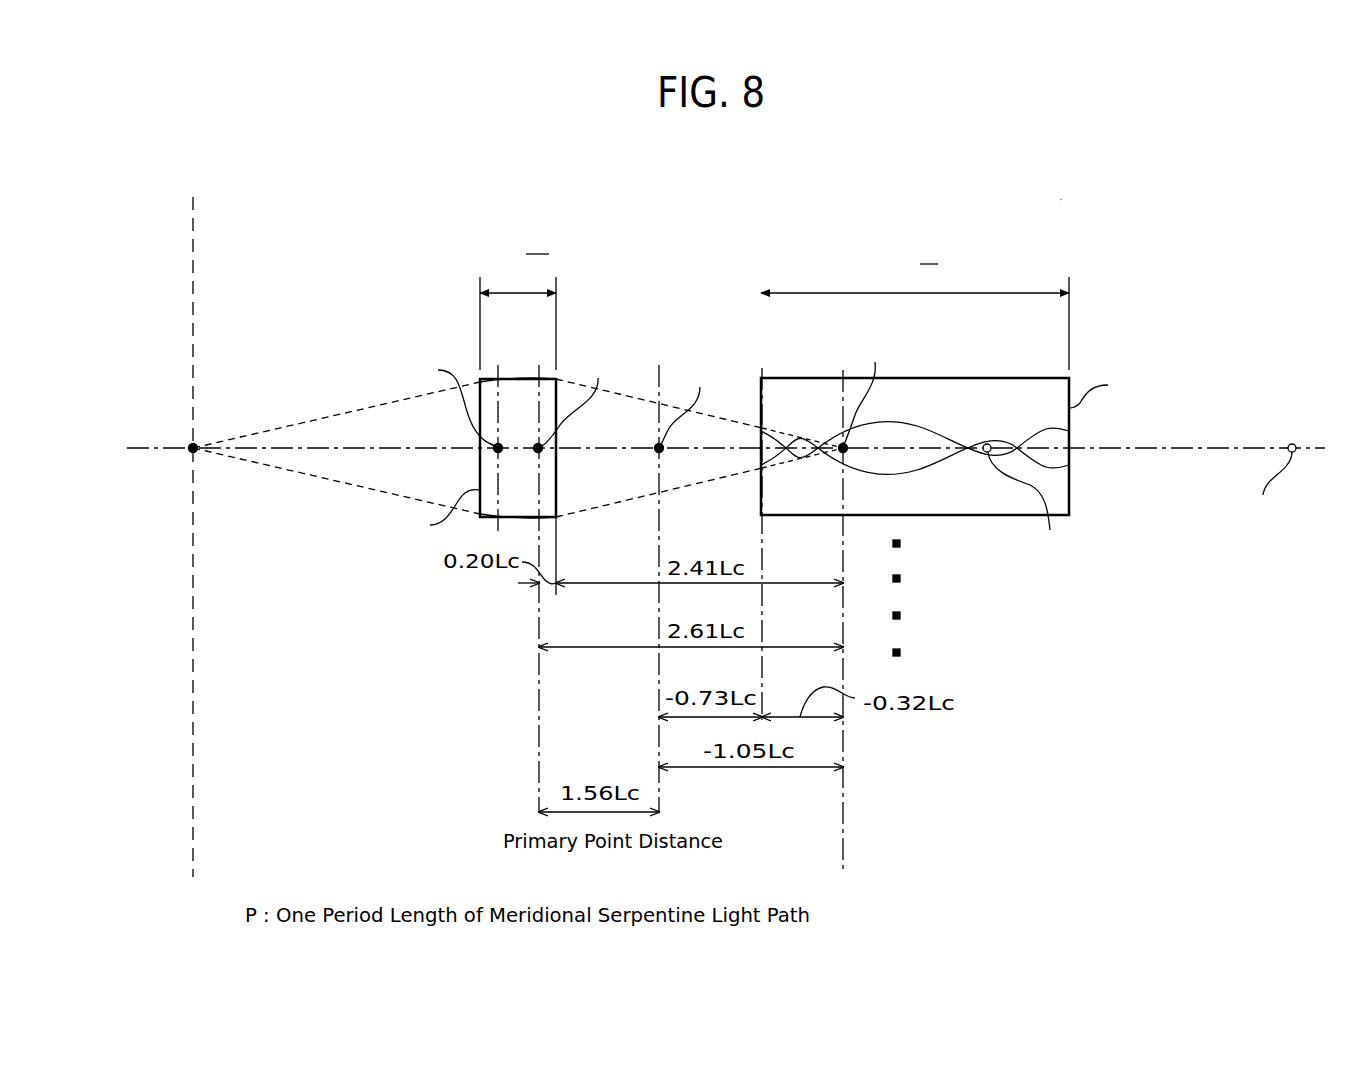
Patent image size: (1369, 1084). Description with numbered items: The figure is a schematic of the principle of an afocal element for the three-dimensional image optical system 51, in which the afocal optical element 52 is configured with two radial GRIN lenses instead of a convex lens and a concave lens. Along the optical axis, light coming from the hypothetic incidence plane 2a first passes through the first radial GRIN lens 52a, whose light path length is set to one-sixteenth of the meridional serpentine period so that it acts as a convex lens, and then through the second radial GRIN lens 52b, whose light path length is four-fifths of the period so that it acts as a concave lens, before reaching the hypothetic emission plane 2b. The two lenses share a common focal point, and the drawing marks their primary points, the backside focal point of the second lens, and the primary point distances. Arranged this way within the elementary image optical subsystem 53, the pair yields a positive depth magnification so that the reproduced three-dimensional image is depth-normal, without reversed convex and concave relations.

The three-dimensional image optical system 51 is at (1060, 200).
The afocal optical element 52 is at (684, 230).
The first radial GRIN lens 52a is at (483, 379).
The second radial GRIN lens 52b is at (1033, 378).
The elementary image optical subsystem 53 is at (148, 746).
The hypothetic incidence plane 2a is at (193, 832).
The hypothetic emission plane 2b is at (843, 830).